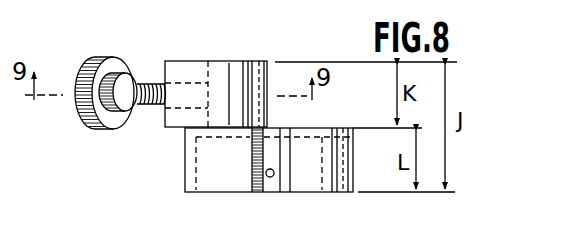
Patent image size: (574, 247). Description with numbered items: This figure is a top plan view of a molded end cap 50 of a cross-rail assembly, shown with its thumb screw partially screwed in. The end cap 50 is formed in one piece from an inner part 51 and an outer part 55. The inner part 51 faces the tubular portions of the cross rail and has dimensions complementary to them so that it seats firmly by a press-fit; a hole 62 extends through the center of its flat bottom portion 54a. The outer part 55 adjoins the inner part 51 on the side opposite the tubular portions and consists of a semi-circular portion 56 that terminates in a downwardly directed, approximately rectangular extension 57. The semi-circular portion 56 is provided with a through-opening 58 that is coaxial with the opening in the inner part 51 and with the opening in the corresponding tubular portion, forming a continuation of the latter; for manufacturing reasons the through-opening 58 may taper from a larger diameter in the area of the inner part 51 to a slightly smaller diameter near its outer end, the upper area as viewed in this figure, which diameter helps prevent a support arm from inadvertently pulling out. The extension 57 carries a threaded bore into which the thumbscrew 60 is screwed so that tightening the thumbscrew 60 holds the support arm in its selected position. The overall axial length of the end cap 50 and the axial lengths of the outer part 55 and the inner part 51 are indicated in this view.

The end cap 50 is at (168, 186).
The inner part 51 is at (330, 193).
The flat bottom portion 54a is at (272, 150).
The outer part 55 is at (190, 58).
The semi-circular portion 56 is at (250, 61).
The extension 57 is at (175, 73).
The through-opening 58 is at (210, 78).
The thumbscrew 60 is at (90, 58).
The hole 62 is at (273, 178).